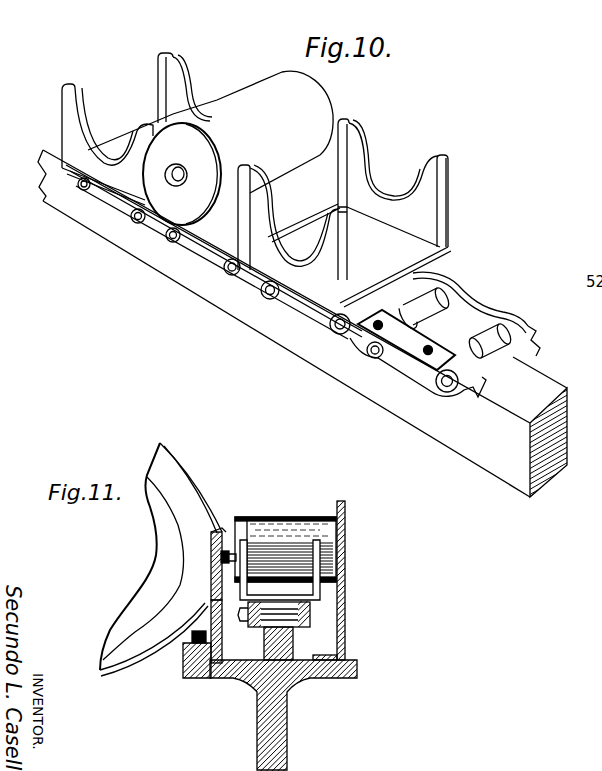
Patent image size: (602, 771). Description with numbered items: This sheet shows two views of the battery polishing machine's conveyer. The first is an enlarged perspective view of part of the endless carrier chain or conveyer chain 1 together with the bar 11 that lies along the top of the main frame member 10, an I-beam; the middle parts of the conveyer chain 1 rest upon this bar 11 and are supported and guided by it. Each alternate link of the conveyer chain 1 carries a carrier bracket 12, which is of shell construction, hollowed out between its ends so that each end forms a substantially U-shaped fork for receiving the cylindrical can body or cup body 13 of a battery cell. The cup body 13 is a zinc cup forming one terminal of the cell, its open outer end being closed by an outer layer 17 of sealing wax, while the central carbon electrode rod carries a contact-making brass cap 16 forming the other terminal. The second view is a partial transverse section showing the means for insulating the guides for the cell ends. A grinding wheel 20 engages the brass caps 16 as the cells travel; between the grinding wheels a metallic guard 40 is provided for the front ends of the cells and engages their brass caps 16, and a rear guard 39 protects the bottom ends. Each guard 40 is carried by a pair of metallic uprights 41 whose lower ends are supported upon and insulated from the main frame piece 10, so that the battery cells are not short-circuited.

In FIG. 10, the endless carrier chain 1 is at (468, 310).
In FIG. 11, the endless carrier chain 1 is at (311, 615).
In FIG. 11, the main frame member 10 is at (262, 718).
In FIG. 10, the bar 11 is at (62, 193).
In FIG. 11, the bar 11 is at (294, 643).
In FIG. 10, the carrier bracket 12 is at (168, 101).
In FIG. 11, the carrier bracket 12 is at (320, 586).
In FIG. 10, the cup body 13 is at (288, 97).
In FIG. 11, the cup body 13 is at (283, 528).
In FIG. 10, the brass cap 16 is at (166, 180).
In FIG. 11, the brass cap 16 is at (225, 549).
In FIG. 10, the outer layer of sealing wax 17 is at (198, 148).
In FIG. 11, the grinding wheel 20 is at (175, 470).
In FIG. 11, the rear guard 39 is at (347, 512).
In FIG. 11, the guard 40 is at (218, 520).
In FIG. 11, the metallic upright 41 is at (209, 598).